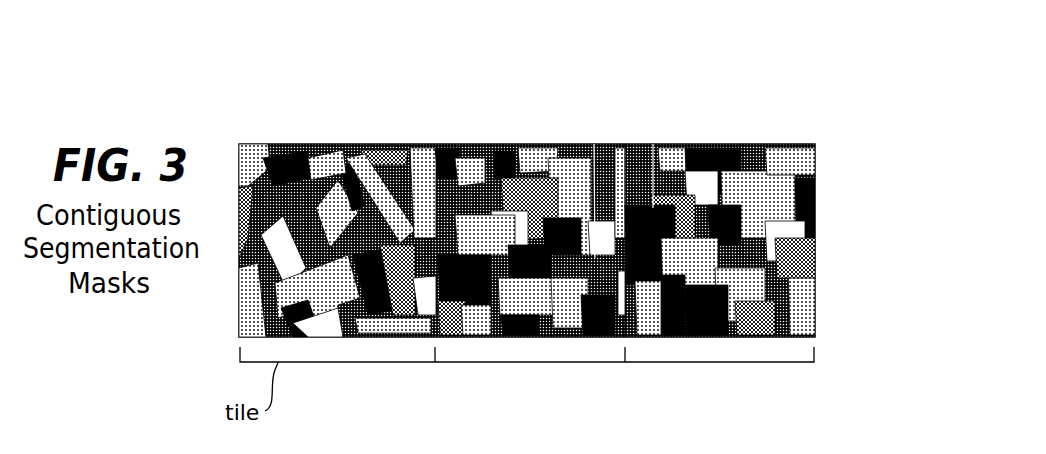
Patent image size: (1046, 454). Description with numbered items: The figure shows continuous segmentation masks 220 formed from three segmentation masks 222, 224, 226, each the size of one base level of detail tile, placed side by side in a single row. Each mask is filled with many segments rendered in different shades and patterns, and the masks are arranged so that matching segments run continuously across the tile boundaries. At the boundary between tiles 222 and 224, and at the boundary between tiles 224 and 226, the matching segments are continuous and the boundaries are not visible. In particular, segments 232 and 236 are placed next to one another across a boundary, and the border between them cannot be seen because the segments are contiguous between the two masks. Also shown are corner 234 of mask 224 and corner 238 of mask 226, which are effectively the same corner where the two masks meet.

The continuous segmentation masks 220 is at (126, 354).
The segmentation mask 222 is at (356, 354).
The segmentation mask 224 is at (518, 354).
The segmentation mask 226 is at (686, 354).
The segment 232 is at (586, 136).
The corner 234 is at (617, 136).
The segment 236 is at (645, 136).
The corner 238 is at (617, 136).